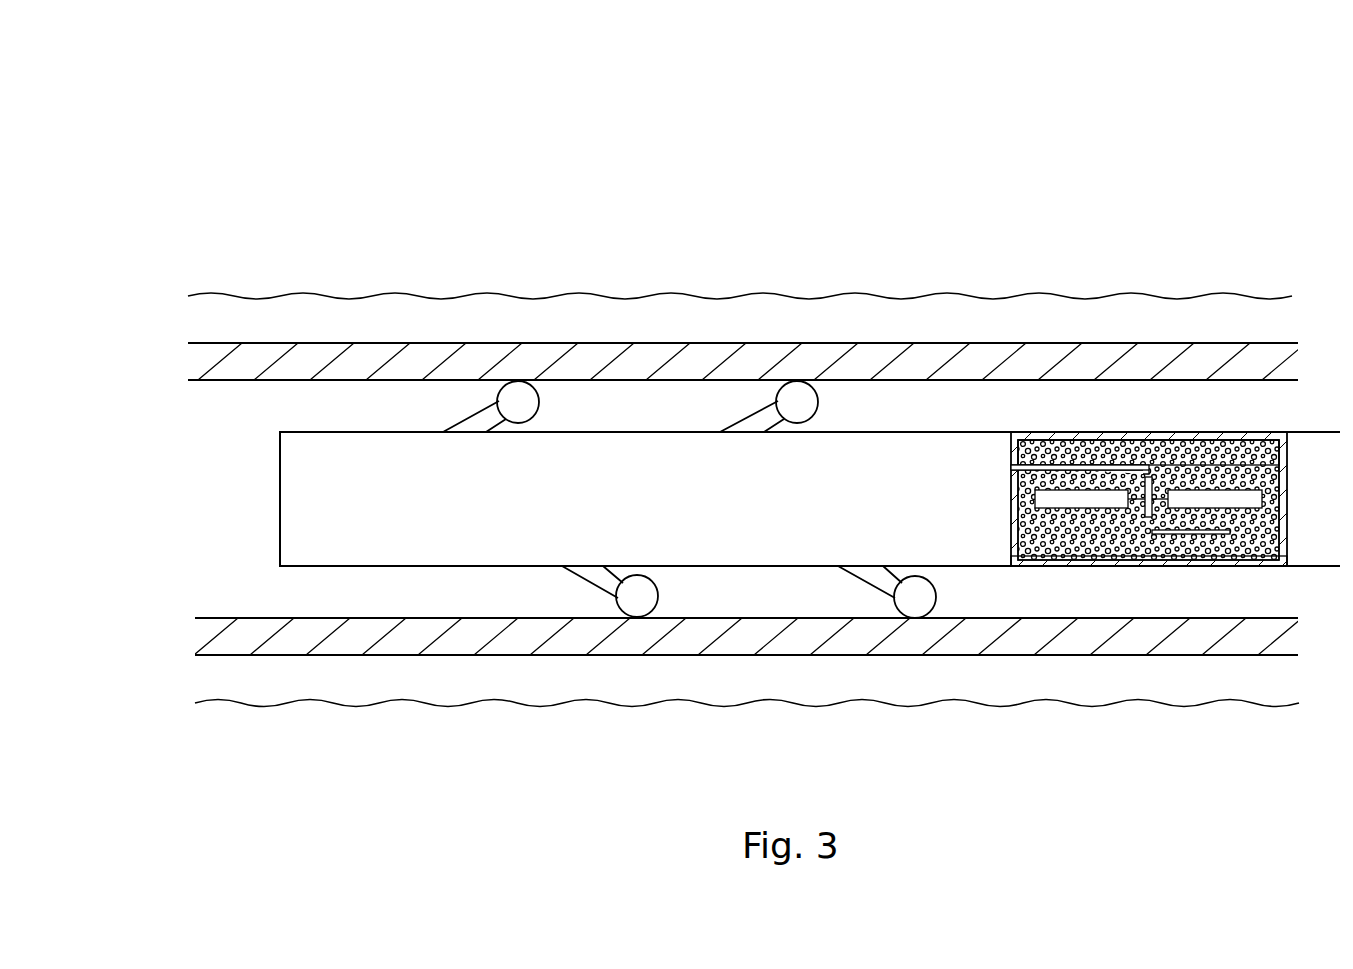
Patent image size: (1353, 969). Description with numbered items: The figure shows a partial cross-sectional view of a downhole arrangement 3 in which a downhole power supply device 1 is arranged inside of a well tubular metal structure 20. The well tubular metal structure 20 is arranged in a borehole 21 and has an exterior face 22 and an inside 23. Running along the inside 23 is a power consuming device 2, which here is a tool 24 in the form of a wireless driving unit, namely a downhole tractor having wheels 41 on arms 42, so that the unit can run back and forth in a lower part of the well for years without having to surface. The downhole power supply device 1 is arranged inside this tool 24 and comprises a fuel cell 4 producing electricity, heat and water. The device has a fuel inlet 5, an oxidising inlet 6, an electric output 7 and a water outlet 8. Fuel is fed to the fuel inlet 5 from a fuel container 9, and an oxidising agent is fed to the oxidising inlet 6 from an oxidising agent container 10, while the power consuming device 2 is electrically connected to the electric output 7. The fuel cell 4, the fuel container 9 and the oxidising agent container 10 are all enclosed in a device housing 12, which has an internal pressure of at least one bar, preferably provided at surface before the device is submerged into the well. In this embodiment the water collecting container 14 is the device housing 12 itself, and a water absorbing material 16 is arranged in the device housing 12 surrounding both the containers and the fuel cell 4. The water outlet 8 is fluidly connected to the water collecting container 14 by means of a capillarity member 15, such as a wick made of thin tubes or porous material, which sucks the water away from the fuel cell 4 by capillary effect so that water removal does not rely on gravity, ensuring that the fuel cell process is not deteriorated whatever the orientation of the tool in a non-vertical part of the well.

The downhole power supply device 1 is at (1132, 527).
The power consuming device 2 is at (871, 510).
The linear guide arrangement 3 is at (224, 172).
The fuel cell 4 is at (1147, 522).
The fuel inlet 5 is at (1135, 545).
The oxidising inlet 6 is at (1158, 540).
The electric output 7 is at (1047, 443).
The water outlet 8 is at (1150, 535).
The fuel container 9 is at (1100, 502).
The oxidising agent container 10 is at (1193, 502).
The device housing 12 is at (1023, 562).
The water collecting container 14 is at (1252, 443).
The capillarity member 15 is at (1230, 545).
The water absorbing material 16 is at (1113, 445).
The well tubular metal structure 20 is at (352, 358).
The borehole 21 is at (272, 305).
The exterior face 22 is at (398, 345).
The inside 23 is at (390, 598).
The tool 24 is at (645, 460).
The wheels 41 is at (519, 392).
The arms 42 is at (781, 410).